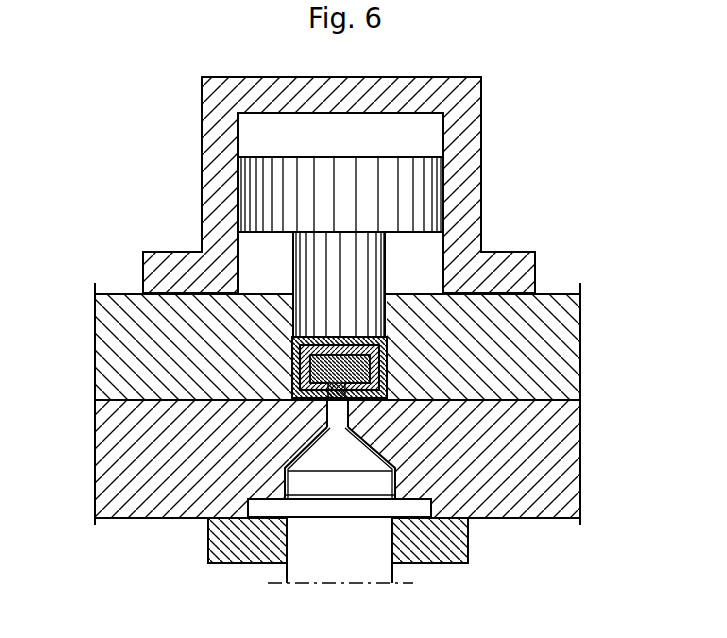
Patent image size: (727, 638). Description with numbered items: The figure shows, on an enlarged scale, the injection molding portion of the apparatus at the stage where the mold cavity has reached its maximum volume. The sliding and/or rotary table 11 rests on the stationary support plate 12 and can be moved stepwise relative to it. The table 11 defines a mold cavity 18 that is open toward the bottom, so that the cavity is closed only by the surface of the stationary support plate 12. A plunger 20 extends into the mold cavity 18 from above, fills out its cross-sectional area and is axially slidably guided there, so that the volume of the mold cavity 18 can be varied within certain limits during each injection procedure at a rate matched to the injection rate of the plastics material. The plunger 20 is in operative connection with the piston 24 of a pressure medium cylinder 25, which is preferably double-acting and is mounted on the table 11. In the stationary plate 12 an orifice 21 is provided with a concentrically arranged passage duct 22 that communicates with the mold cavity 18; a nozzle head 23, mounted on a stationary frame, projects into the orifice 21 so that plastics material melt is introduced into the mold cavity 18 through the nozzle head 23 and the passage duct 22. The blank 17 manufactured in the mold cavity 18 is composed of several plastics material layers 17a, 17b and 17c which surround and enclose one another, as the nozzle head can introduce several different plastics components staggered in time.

The sliding and/or rotary table 11 is at (125, 333).
The stationary support plate 12 is at (125, 452).
The blank 17 is at (466, 347).
The plastics material layer 17a is at (382, 352).
The plastics material layer 17b is at (378, 367).
The plastics material layer 17c is at (372, 377).
The mold cavity 18 is at (290, 384).
The plunger 20 is at (370, 262).
The orifice 21 is at (382, 447).
The passage duct 22 is at (340, 413).
The nozzle head 23 is at (367, 567).
The piston 24 is at (413, 190).
The pressure medium cylinder 25 is at (462, 120).